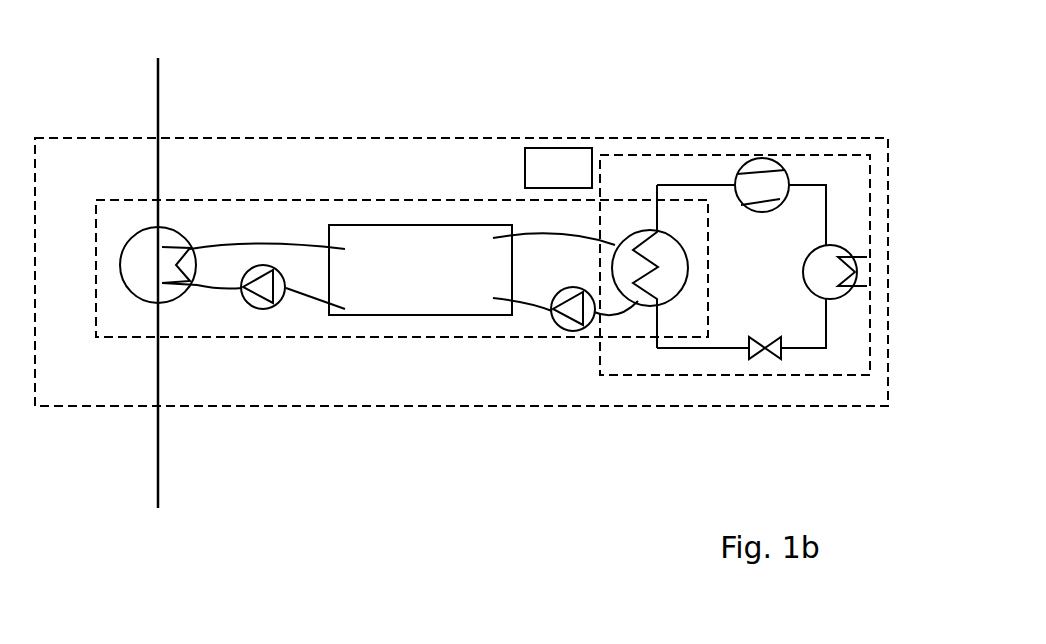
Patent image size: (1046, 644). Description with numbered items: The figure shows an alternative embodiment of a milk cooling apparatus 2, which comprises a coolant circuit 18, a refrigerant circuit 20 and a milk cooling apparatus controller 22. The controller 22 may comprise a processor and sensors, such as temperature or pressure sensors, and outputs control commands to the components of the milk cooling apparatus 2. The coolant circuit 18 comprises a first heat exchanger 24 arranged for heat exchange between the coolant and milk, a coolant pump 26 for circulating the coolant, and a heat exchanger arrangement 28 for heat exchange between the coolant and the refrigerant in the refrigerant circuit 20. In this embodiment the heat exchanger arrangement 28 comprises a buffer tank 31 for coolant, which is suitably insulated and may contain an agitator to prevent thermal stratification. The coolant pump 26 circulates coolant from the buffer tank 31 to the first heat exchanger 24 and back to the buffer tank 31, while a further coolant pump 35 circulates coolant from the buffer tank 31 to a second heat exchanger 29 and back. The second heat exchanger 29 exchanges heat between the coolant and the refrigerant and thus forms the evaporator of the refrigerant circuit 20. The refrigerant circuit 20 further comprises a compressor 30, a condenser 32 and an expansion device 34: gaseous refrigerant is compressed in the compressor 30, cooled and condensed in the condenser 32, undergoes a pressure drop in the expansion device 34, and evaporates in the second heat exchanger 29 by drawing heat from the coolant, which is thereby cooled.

The milk cooling apparatus 2 is at (638, 408).
The coolant circuit 18 is at (516, 339).
The refrigerant circuit 20 is at (792, 375).
The milk cooling apparatus controller 22 is at (558, 168).
The first heat exchanger 24 is at (142, 290).
The coolant pump 26 is at (260, 306).
The heat exchanger arrangement 28 is at (595, 210).
The second heat exchanger 29 is at (665, 292).
The compressor 30 is at (747, 180).
The buffer tank 31 is at (433, 263).
The condenser 32 is at (827, 258).
The expansion device 34 is at (754, 356).
The further coolant pump 35 is at (558, 328).